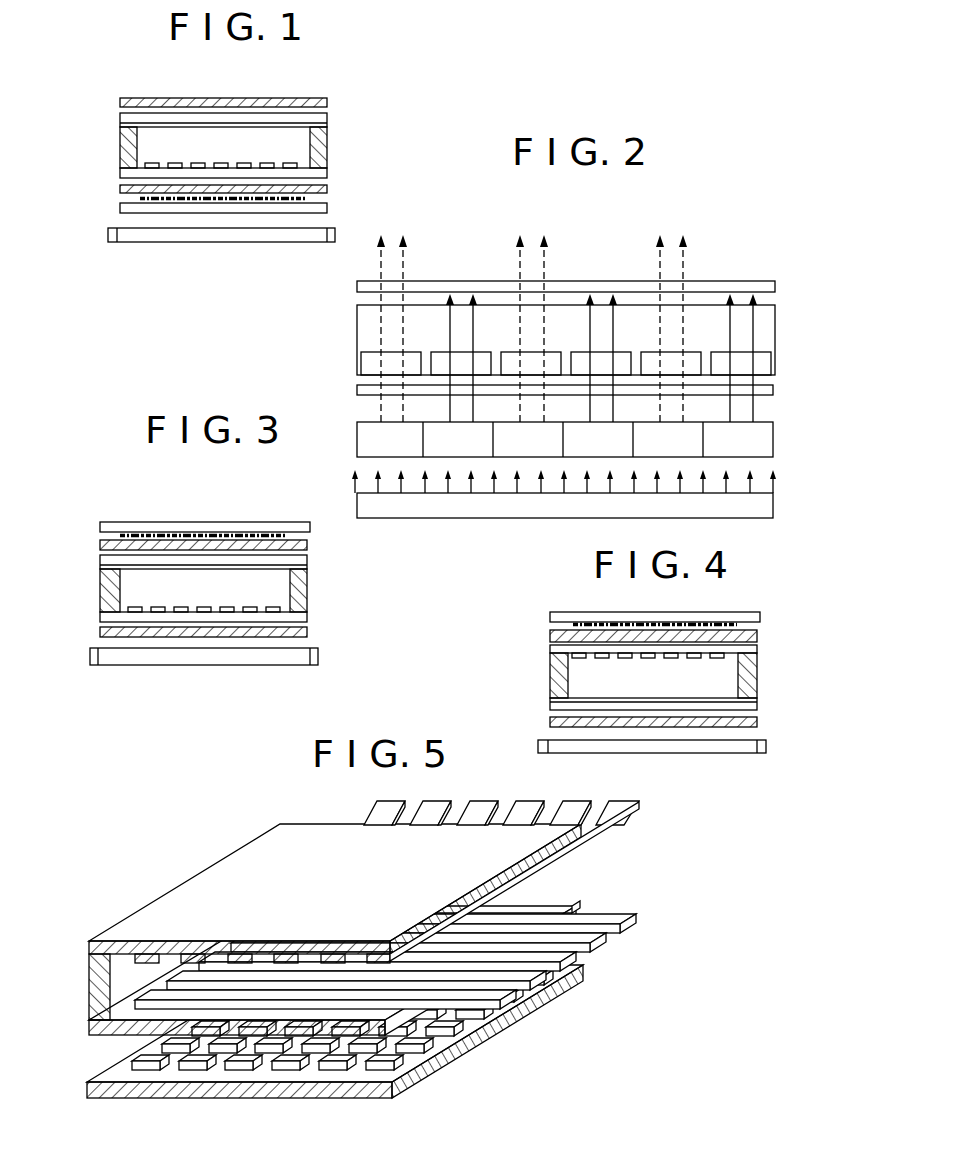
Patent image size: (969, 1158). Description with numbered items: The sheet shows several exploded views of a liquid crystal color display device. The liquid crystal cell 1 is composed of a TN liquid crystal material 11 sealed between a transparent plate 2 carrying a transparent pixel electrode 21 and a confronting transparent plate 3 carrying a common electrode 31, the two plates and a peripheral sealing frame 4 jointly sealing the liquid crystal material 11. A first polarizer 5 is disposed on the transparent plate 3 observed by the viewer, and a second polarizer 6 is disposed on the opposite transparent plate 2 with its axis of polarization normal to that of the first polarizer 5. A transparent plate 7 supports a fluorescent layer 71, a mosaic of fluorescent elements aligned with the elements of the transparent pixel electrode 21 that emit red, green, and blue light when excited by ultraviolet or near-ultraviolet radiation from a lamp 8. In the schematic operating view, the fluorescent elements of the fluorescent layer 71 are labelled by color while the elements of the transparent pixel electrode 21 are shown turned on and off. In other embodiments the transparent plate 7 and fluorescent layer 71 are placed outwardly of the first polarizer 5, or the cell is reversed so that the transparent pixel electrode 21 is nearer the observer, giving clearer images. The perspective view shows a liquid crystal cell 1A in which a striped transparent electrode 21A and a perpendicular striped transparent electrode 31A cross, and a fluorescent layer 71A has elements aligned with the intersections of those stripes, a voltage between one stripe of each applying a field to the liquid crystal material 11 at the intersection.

In FIG. 1, the liquid crystal cell 1 is at (112, 113).
In FIG. 2, the liquid crystal cell 1 is at (786, 341).
In FIG. 3, the liquid crystal cell 1 is at (98, 555).
In FIG. 4, the liquid crystal cell 1 is at (544, 645).
In FIG. 5, the liquid crystal cell 1A is at (375, 905).
In FIG. 1, the transparent plate 2 is at (327, 177).
In FIG. 3, the transparent plate 2 is at (308, 620).
In FIG. 4, the transparent plate 2 is at (757, 651).
In FIG. 5, the transparent plate 2 is at (562, 908).
In FIG. 1, the transparent plate 3 is at (327, 116).
In FIG. 3, the transparent plate 3 is at (308, 562).
In FIG. 4, the transparent plate 3 is at (757, 708).
In FIG. 5, the transparent plate 3 is at (543, 845).
In FIG. 1, the peripheral sealing frame 4 is at (327, 139).
In FIG. 3, the peripheral sealing frame 4 is at (310, 587).
In FIG. 4, the peripheral sealing frame 4 is at (757, 675).
In FIG. 5, the peripheral sealing frame 4 is at (89, 976).
In FIG. 1, the first polarizer 5 is at (120, 100).
In FIG. 2, the first polarizer 5 is at (786, 287).
In FIG. 3, the first polarizer 5 is at (100, 548).
In FIG. 4, the first polarizer 5 is at (550, 634).
In FIG. 1, the second polarizer 6 is at (118, 187).
In FIG. 2, the second polarizer 6 is at (786, 393).
In FIG. 3, the second polarizer 6 is at (100, 630).
In FIG. 4, the second polarizer 6 is at (552, 720).
In FIG. 1, the transparent plate 7 is at (117, 208).
In FIG. 3, the transparent plate 7 is at (103, 523).
In FIG. 4, the transparent plate 7 is at (552, 613).
In FIG. 5, the transparent plate 7 is at (140, 1097).
In FIG. 1, the lamp 8 is at (128, 236).
In FIG. 2, the lamp 8 is at (777, 507).
In FIG. 3, the lamp 8 is at (113, 665).
In FIG. 4, the lamp 8 is at (707, 753).
In FIG. 1, the TN liquid crystal material 11 is at (231, 154).
In FIG. 3, the TN liquid crystal material 11 is at (213, 595).
In FIG. 4, the TN liquid crystal material 11 is at (665, 686).
In FIG. 5, the TN liquid crystal material 11 is at (128, 990).
In FIG. 1, the transparent pixel electrode 21 is at (297, 161).
In FIG. 2, the transparent pixel electrode 21 is at (786, 367).
In FIG. 3, the transparent pixel electrode 21 is at (282, 603).
In FIG. 4, the transparent pixel electrode 21 is at (727, 660).
In FIG. 5, the transparent electrode 21A is at (623, 920).
In FIG. 1, the common electrode 31 is at (327, 127).
In FIG. 3, the common electrode 31 is at (308, 569).
In FIG. 4, the common electrode 31 is at (733, 691).
In FIG. 5, the transparent electrode 31A is at (638, 803).
In FIG. 1, the fluorescent layer 71 is at (128, 198).
In FIG. 2, the fluorescent layer 71 is at (786, 440).
In FIG. 3, the fluorescent layer 71 is at (120, 534).
In FIG. 4, the fluorescent layer 71 is at (573, 624).
In FIG. 5, the fluorescent layer 71A is at (240, 1070).